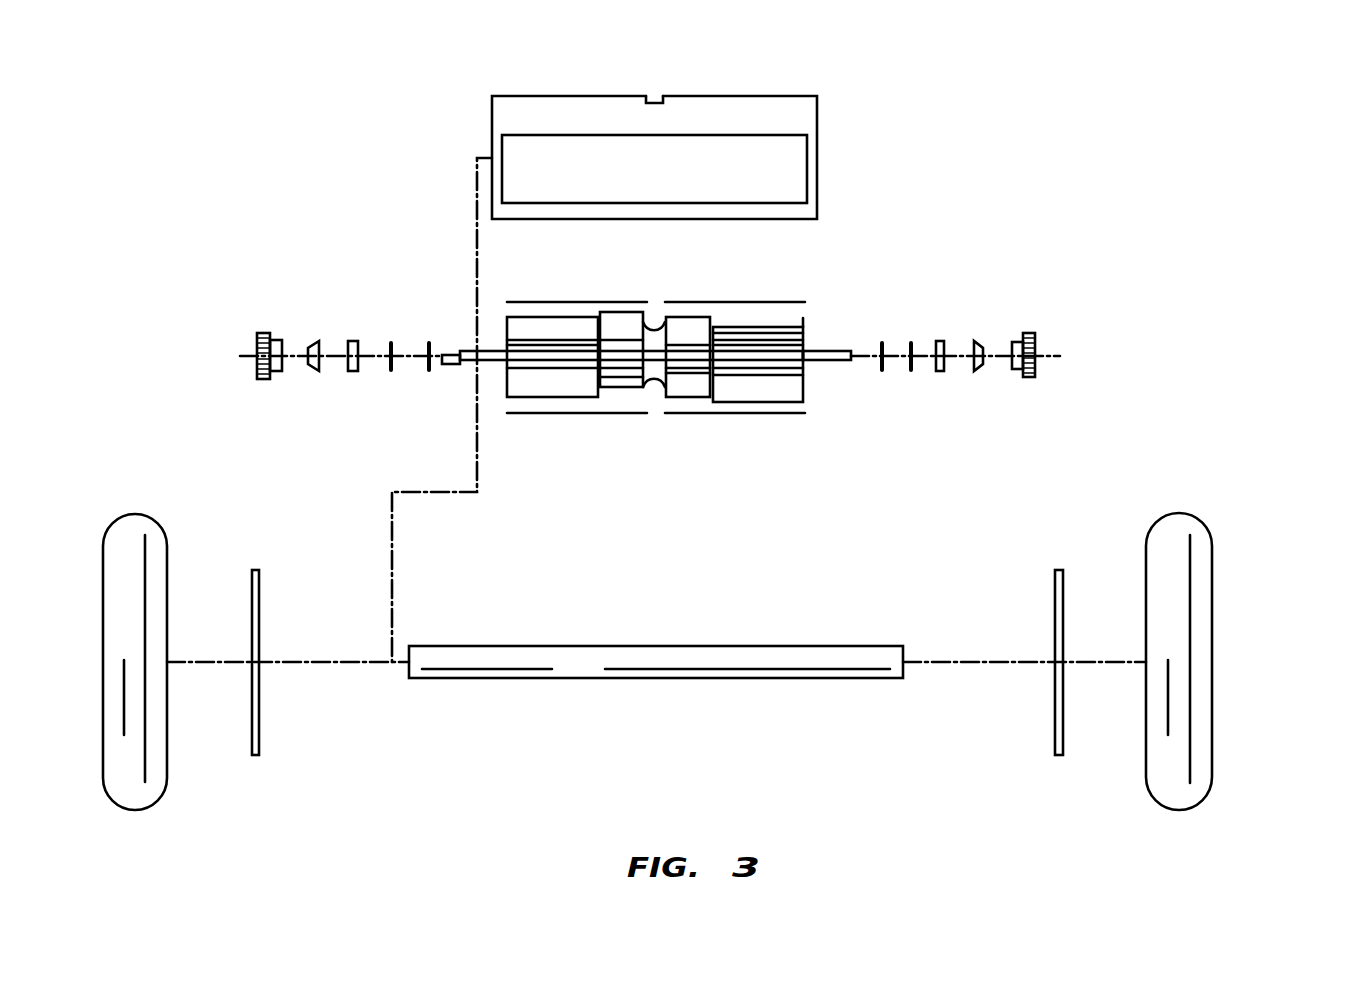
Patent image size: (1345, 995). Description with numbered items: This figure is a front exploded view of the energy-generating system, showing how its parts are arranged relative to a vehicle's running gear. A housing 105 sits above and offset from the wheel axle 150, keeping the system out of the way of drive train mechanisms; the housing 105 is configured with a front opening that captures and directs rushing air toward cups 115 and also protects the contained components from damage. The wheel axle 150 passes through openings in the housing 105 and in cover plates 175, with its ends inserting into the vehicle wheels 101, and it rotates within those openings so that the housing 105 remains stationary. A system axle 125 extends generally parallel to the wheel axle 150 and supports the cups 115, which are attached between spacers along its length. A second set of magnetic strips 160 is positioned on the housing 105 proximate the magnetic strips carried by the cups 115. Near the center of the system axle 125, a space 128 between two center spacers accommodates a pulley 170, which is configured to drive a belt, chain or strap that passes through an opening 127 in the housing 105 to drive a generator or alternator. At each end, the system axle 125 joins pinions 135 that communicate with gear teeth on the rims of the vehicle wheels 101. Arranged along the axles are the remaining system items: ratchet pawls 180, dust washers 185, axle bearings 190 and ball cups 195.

The vehicle wheel 101 is at (1222, 597).
The housing 105 is at (827, 160).
The cups 115 is at (748, 387).
The system axle 125 is at (826, 343).
The opening 127 is at (652, 90).
The space 128 is at (653, 397).
The pinions 135 is at (1027, 385).
The wheel axle 150 is at (580, 678).
The second set of magnetic strips 160 is at (737, 300).
The pulley 170 is at (655, 327).
The cover plates 175 is at (1048, 693).
The ratchet pawls 180 is at (428, 333).
The dust washers 185 is at (914, 378).
The axle bearings 190 is at (940, 380).
The ball cups 195 is at (976, 332).